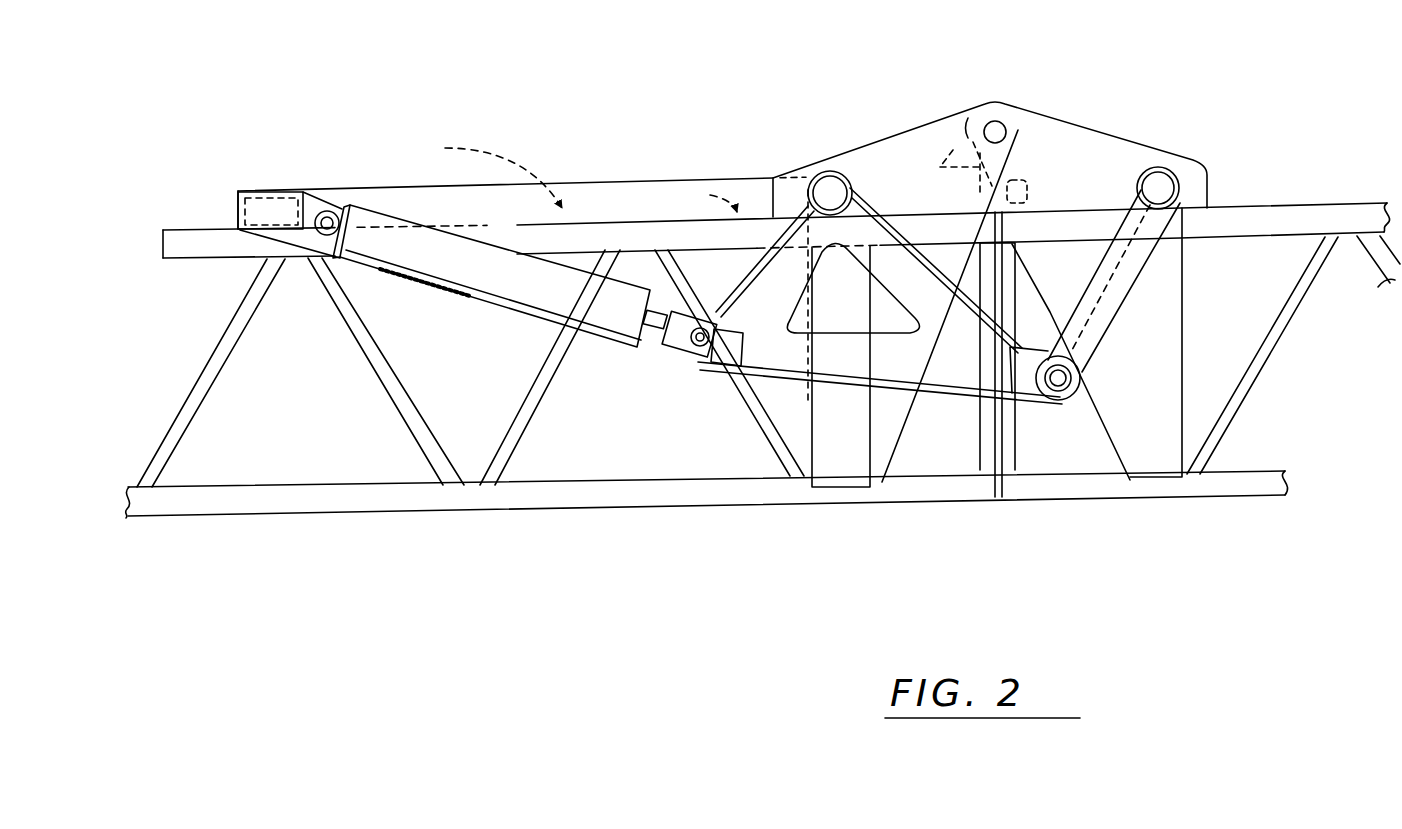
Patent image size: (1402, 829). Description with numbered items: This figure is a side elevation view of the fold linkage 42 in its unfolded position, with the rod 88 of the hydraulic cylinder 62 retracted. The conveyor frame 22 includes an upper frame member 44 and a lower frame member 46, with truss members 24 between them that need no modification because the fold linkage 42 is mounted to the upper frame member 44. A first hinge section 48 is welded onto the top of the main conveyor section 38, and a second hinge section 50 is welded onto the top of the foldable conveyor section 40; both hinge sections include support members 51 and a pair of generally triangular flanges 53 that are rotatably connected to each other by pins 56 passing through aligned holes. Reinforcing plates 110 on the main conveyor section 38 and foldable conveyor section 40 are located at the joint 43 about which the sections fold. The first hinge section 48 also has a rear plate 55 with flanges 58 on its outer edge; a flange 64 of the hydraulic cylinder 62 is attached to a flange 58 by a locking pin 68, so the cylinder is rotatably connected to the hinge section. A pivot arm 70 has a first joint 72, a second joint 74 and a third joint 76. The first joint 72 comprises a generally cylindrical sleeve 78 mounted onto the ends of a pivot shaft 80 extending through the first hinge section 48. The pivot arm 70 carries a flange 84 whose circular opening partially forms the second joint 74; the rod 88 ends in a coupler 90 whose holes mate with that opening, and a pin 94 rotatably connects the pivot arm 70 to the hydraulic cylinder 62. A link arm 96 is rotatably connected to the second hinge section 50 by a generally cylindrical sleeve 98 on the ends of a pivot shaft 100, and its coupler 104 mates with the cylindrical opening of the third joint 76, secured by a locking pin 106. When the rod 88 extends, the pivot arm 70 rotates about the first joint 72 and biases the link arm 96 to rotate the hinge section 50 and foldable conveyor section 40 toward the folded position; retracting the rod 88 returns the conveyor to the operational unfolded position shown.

The conveyor frame 22 is at (158, 356).
The diagonal brace 24 is at (395, 406).
The main conveyor section 38 is at (488, 513).
The foldable conveyor section 40 is at (1262, 500).
The fold linkage 42 is at (1095, 50).
The joint 43 is at (1006, 94).
The upper frame member 44 is at (188, 229).
The lower frame member 46 is at (318, 517).
The first hinge section 48 is at (652, 181).
The second hinge section 50 is at (1152, 144).
The support members 51 is at (392, 215).
The triangular flanges 53 is at (903, 124).
The rear plate 55 is at (276, 195).
The pins 56 is at (988, 124).
The flanges 58 is at (262, 214).
The hydraulic cylinder 62 is at (468, 292).
The flange 64 is at (336, 220).
The locking pin 68 is at (320, 236).
The pivot arm 70 is at (790, 383).
The first joint 72 is at (830, 162).
The second joint 74 is at (690, 365).
The third joint 76 is at (1067, 402).
The cylindrical sleeve 78 is at (822, 186).
The pivot shaft 80 is at (841, 184).
The flange 84 is at (744, 350).
The rod 88 is at (647, 344).
The coupler 90 is at (696, 326).
The pin 94 is at (710, 365).
The link arm 96 is at (1138, 288).
The cylindrical sleeve 98 is at (1164, 190).
The pivot shaft 100 is at (1181, 183).
The coupler 104 is at (1087, 362).
The locking pin 106 is at (1072, 381).
The reinforcing plates 110 is at (848, 465).